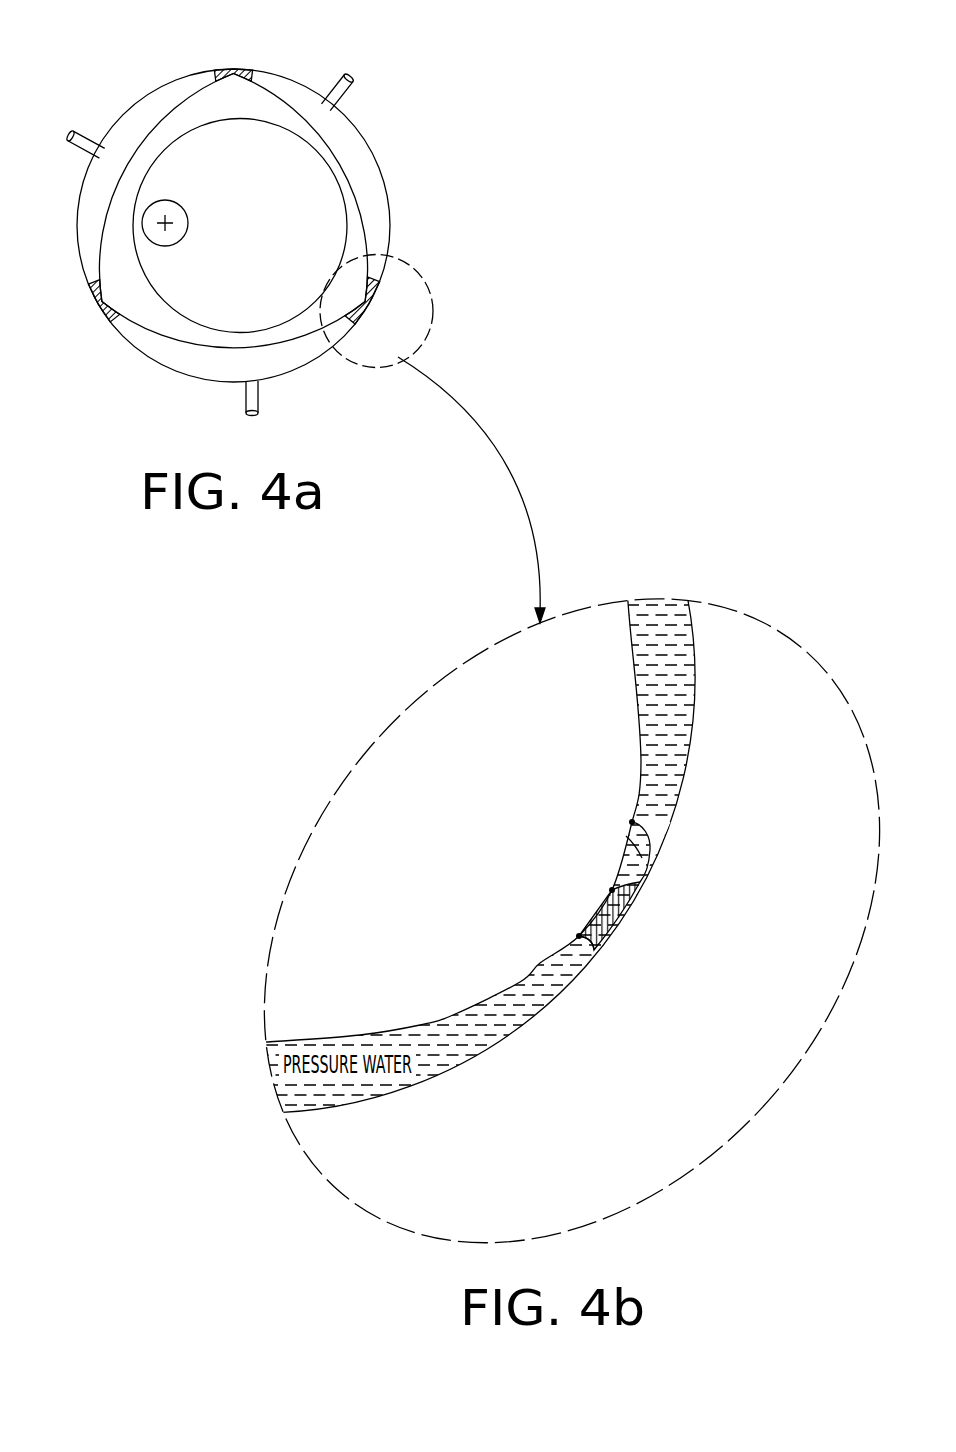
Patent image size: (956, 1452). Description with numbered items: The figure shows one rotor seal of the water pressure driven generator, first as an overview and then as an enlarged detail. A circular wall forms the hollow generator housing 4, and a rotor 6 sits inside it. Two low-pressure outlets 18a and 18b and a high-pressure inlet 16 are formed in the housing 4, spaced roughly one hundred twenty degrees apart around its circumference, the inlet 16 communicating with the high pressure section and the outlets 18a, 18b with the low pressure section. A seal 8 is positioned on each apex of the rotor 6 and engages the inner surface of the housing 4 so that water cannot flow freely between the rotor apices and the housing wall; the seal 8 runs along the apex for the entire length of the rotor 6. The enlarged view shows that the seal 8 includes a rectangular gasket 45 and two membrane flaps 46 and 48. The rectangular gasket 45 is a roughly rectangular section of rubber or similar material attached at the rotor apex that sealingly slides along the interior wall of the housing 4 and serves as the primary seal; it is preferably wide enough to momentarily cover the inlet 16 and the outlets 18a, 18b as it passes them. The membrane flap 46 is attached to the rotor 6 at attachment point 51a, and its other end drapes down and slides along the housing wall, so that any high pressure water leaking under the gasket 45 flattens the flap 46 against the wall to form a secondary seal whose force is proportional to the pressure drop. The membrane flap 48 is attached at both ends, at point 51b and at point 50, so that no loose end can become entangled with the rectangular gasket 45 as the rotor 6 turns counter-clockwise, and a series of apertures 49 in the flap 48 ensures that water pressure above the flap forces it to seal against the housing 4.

In FIG. 4a, the generator housing 4 is at (364, 113).
In FIG. 4b, the generator housing 4 is at (512, 1047).
In FIG. 4a, the rotor 6 is at (372, 214).
In FIG. 4b, the rotor 6 is at (466, 805).
In FIG. 4a, the seal 8 is at (385, 310).
In FIG. 4b, the seal 8 is at (661, 957).
In FIG. 4a, the high-pressure inlet 16 is at (244, 400).
In FIG. 4a, the low-pressure outlet 18a is at (331, 84).
In FIG. 4a, the low-pressure outlet 18b is at (80, 131).
In FIG. 4b, the rectangular gasket 45 is at (628, 928).
In FIG. 4b, the membrane flap 46 is at (593, 952).
In FIG. 4b, the membrane flap 48 is at (642, 882).
In FIG. 4b, the apertures 49 is at (626, 836).
In FIG. 4b, the attachment point 50 is at (630, 820).
In FIG. 4b, the attachment point 51a is at (577, 936).
In FIG. 4b, the attachment point 51b is at (610, 890).